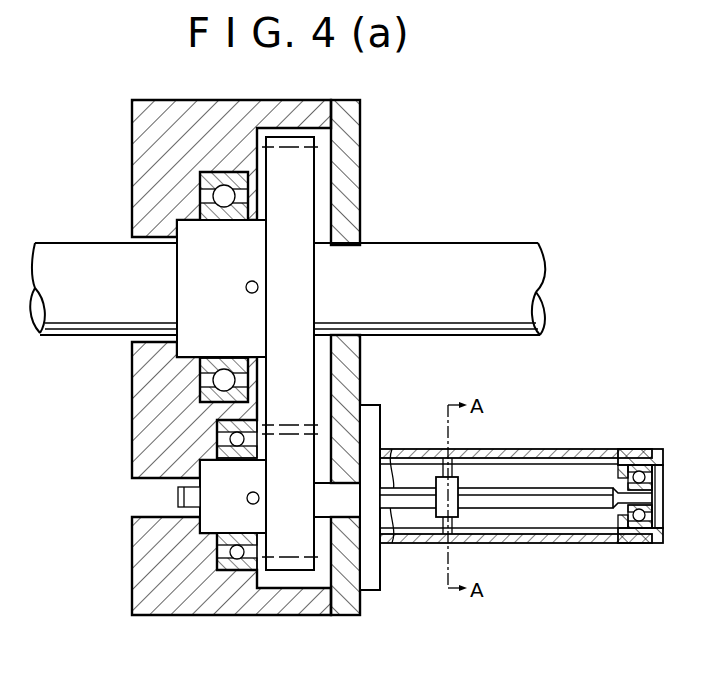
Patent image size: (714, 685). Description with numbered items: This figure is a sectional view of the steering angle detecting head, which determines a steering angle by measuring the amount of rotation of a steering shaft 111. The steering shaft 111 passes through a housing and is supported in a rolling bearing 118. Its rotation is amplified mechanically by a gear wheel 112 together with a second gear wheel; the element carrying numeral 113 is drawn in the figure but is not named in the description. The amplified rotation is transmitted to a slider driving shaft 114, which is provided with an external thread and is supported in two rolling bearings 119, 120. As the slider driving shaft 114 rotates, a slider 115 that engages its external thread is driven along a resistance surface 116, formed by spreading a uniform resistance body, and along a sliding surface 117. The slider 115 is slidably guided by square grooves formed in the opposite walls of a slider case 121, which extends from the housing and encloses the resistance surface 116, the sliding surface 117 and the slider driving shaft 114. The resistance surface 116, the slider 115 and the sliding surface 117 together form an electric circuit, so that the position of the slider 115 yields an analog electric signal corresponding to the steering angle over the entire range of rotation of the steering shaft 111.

The steering shaft 111 is at (470, 267).
The gear wheel 112 is at (298, 203).
The hub 113 is at (283, 548).
The slider driving shaft 114 is at (178, 494).
The slider 115 is at (438, 495).
The resistance surface 116 is at (526, 464).
The sliding surface 117 is at (572, 528).
The rolling bearing 118 is at (200, 383).
The rolling bearing 119 is at (217, 568).
The rolling bearing 120 is at (645, 543).
The slider case 121 is at (392, 535).